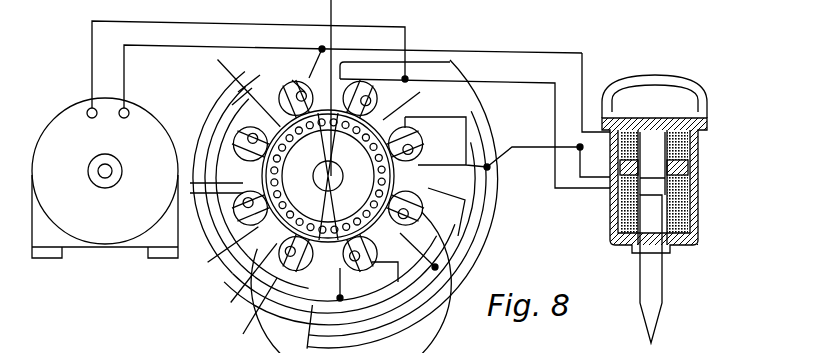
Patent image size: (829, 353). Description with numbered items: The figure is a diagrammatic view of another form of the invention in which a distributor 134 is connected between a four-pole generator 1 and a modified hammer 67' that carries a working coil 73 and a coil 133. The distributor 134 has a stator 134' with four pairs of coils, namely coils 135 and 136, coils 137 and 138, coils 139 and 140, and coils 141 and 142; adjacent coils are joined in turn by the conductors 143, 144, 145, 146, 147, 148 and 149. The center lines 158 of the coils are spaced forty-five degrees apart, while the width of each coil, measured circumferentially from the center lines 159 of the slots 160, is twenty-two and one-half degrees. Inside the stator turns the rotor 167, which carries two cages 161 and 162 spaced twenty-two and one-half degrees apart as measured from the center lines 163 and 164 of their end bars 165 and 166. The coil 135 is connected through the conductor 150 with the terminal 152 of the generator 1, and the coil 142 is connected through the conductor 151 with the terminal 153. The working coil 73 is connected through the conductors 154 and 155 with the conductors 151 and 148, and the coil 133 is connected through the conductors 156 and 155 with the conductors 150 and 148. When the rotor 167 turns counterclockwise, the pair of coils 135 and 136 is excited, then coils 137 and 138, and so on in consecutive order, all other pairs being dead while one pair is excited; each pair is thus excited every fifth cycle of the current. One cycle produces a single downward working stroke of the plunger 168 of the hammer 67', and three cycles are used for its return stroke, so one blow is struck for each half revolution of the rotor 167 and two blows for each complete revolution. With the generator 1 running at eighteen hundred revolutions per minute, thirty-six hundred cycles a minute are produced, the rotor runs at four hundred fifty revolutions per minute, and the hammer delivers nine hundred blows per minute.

The generator 1 is at (105, 178).
The conductor 151 is at (175, 23).
The conductor 150 is at (157, 48).
The terminal 152 is at (128, 118).
The terminal 153 is at (88, 118).
The conductor 154 is at (516, 83).
The conductor 155 is at (505, 150).
The conductor 156 is at (530, 53).
The cage 161 is at (280, 172).
The cage 162 is at (373, 187).
The center line 163 is at (325, 149).
The center line 164 is at (340, 191).
The end bar 165 is at (328, 205).
The end bar 166 is at (313, 221).
The rotor 167 is at (342, 95).
The coil 135 is at (328, 176).
The center line 158 is at (292, 80).
The center line 159 is at (255, 86).
The slot 160 is at (415, 103).
The conductor 149 is at (494, 211).
The conductor 148 is at (482, 233).
The stator 134' is at (373, 233).
The distributor 134 is at (348, 243).
The coil 138 is at (353, 244).
The conductor 145 is at (207, 152).
The coil 137 is at (224, 126).
The conductor 144 is at (229, 107).
The conductor 143 is at (238, 92).
The conductor 146 is at (196, 258).
The coil 139 is at (208, 277).
The conductor 147 is at (222, 296).
The coil 141 is at (249, 311).
The coil 142 is at (400, 77).
The coil 140 is at (425, 136).
The coil 136 is at (364, 272).
The coil 133 is at (700, 150).
The working coil 73 is at (697, 187).
The plunger 168 is at (652, 163).
The hammer 67' is at (689, 269).